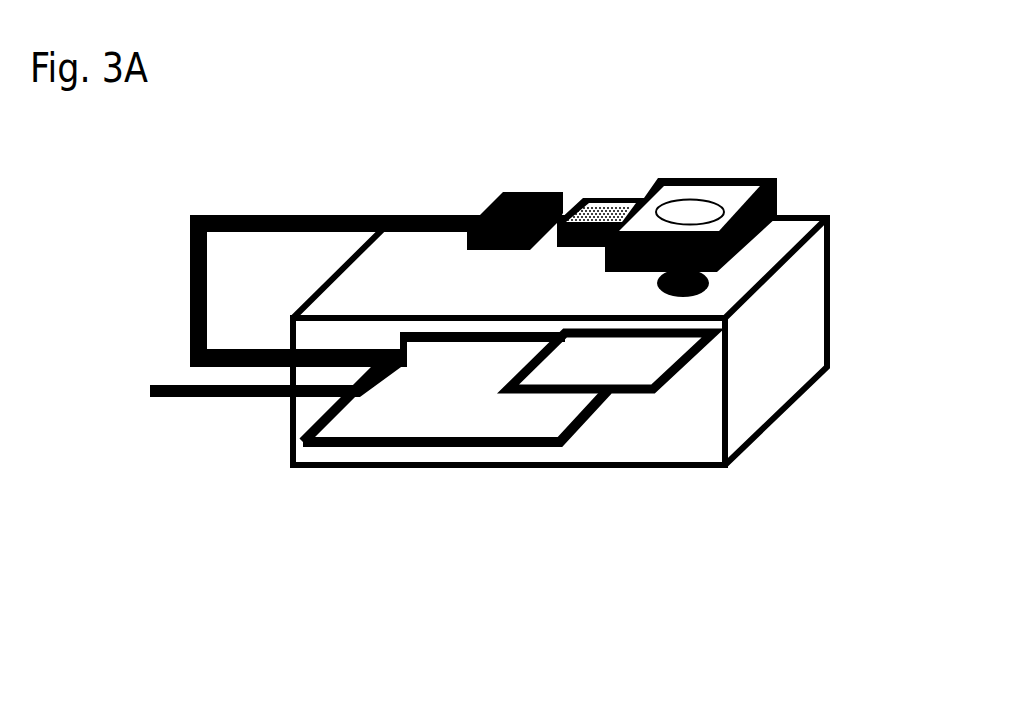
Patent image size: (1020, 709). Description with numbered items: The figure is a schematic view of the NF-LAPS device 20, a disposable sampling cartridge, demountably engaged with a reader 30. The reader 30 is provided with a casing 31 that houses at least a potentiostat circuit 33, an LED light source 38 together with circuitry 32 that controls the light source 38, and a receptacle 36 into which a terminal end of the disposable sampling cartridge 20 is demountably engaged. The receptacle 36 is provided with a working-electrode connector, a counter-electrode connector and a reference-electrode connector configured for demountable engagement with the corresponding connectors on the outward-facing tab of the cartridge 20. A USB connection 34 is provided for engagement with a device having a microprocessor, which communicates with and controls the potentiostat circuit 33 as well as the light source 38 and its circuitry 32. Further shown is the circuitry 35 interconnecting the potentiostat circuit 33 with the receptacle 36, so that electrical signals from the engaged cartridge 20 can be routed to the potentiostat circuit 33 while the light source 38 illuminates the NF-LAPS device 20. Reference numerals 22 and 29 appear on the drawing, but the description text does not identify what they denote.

The NF-LAPS device 20 is at (751, 164).
The sensor chip 22 is at (613, 200).
The optical component 29 is at (692, 208).
The reader 30 is at (593, 88).
The casing 31 is at (662, 433).
The circuitry 32 is at (610, 367).
The potentiostat circuit 33 is at (457, 393).
The USB connection 34 is at (193, 396).
The circuitry 35 is at (282, 214).
The receptacle 36 is at (510, 190).
The LED light source 38 is at (703, 283).